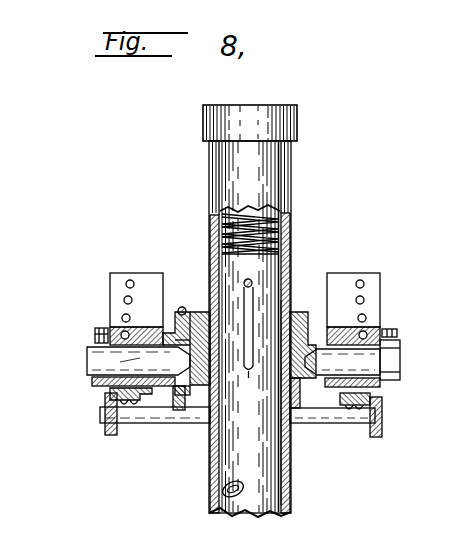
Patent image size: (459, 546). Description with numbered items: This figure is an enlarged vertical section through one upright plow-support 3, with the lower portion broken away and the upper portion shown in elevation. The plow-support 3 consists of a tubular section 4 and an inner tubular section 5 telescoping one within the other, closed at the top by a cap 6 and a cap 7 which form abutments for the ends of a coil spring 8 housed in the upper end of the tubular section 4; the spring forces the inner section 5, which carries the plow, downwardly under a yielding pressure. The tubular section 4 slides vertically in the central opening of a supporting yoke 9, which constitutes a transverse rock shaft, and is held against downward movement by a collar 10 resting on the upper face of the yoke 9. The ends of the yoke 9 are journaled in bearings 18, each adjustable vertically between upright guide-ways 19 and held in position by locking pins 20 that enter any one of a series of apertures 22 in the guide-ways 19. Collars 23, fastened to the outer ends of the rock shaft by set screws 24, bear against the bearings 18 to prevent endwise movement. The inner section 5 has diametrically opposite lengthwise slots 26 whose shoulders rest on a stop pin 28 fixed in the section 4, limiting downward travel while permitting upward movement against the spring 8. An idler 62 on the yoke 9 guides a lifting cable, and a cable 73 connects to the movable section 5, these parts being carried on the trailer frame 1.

The trailer frame 1 is at (112, 416).
The plow-support 3 is at (226, 470).
The tubular section 4 is at (291, 197).
The inner tubular section 5 is at (291, 470).
The cap 6 is at (297, 120).
The cap 7 is at (209, 250).
The coil spring 8 is at (291, 229).
The yoke 9 is at (304, 380).
The collar 10 is at (300, 312).
The bearings 18 is at (127, 386).
The upright guide-ways 19 is at (146, 273).
The locking pins 20 is at (114, 332).
The apertures 22 is at (126, 285).
The collars 23 is at (100, 378).
The set screws 24 is at (95, 337).
The lengthwise slots 26 is at (247, 345).
The stop pin 28 is at (244, 282).
The idler 62 is at (181, 410).
The cable 73 is at (182, 307).